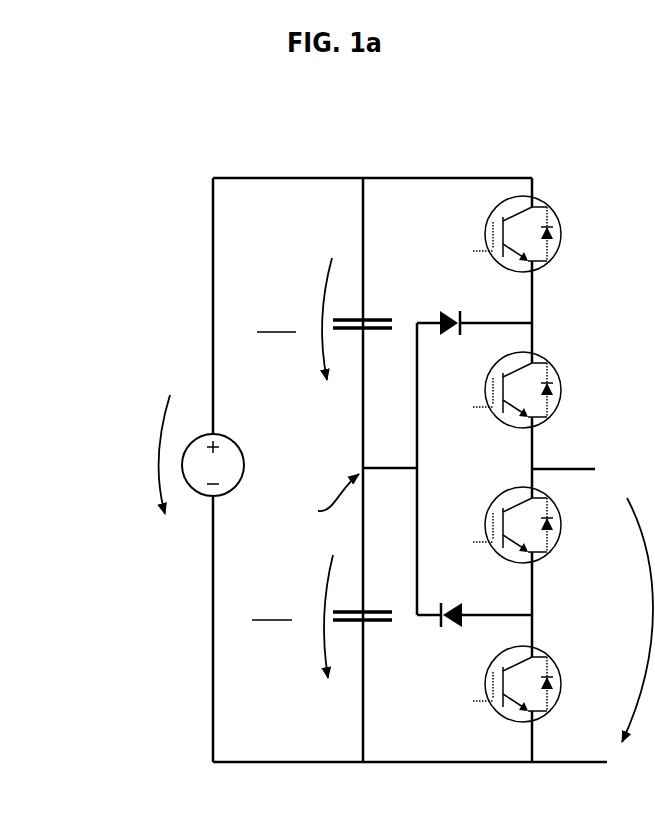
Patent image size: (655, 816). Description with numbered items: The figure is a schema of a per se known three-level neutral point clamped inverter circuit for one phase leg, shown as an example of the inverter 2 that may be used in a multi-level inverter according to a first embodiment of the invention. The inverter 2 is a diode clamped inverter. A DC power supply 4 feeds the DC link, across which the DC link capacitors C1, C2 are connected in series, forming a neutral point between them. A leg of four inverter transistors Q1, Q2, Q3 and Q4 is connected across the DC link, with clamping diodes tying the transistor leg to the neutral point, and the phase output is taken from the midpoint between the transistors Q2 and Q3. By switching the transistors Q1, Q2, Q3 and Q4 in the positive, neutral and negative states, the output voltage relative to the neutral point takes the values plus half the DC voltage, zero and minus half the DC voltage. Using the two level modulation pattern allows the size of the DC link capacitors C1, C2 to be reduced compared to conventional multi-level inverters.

The inverter 2 is at (413, 153).
The DC power supply 4 is at (199, 430).
The transistor Q1 is at (508, 234).
The transistor Q2 is at (508, 390).
The transistor Q3 is at (508, 525).
The transistor Q4 is at (508, 683).
The DC link capacitor C1 is at (372, 303).
The DC link capacitor C2 is at (374, 637).